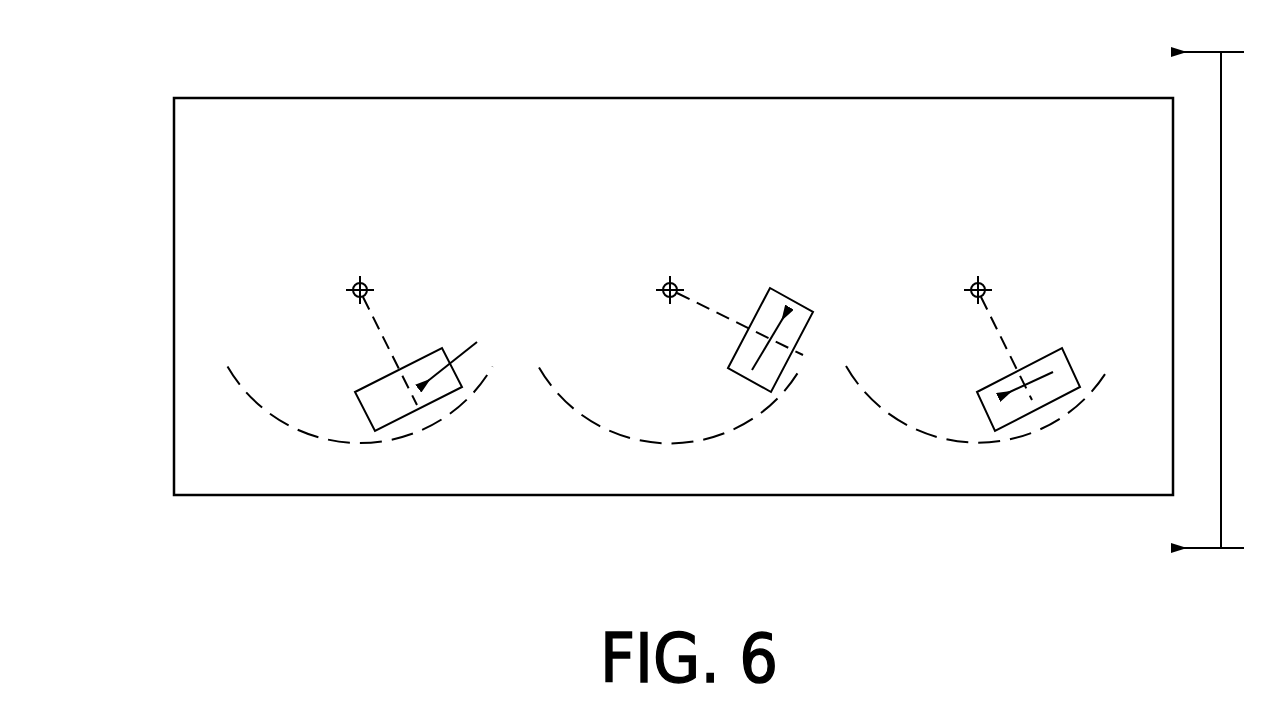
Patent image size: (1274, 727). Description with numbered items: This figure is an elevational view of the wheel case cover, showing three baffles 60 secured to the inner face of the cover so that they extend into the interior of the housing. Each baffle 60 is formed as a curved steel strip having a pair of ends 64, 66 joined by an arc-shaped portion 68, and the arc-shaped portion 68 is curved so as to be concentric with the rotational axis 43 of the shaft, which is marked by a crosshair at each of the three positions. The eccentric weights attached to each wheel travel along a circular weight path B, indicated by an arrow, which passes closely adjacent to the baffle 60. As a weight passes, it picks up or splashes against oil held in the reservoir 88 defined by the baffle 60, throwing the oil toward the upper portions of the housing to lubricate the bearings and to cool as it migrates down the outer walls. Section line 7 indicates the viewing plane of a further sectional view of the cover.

The section line 7- 7 is at (1219, 301).
The central axis 43 is at (365, 282).
The baffle 60 is at (410, 434).
The end 64 is at (230, 367).
The end 66 is at (495, 362).
The arc-shaped portion 68 is at (322, 437).
The reservoir 88 is at (343, 423).
The weight path B is at (492, 372).